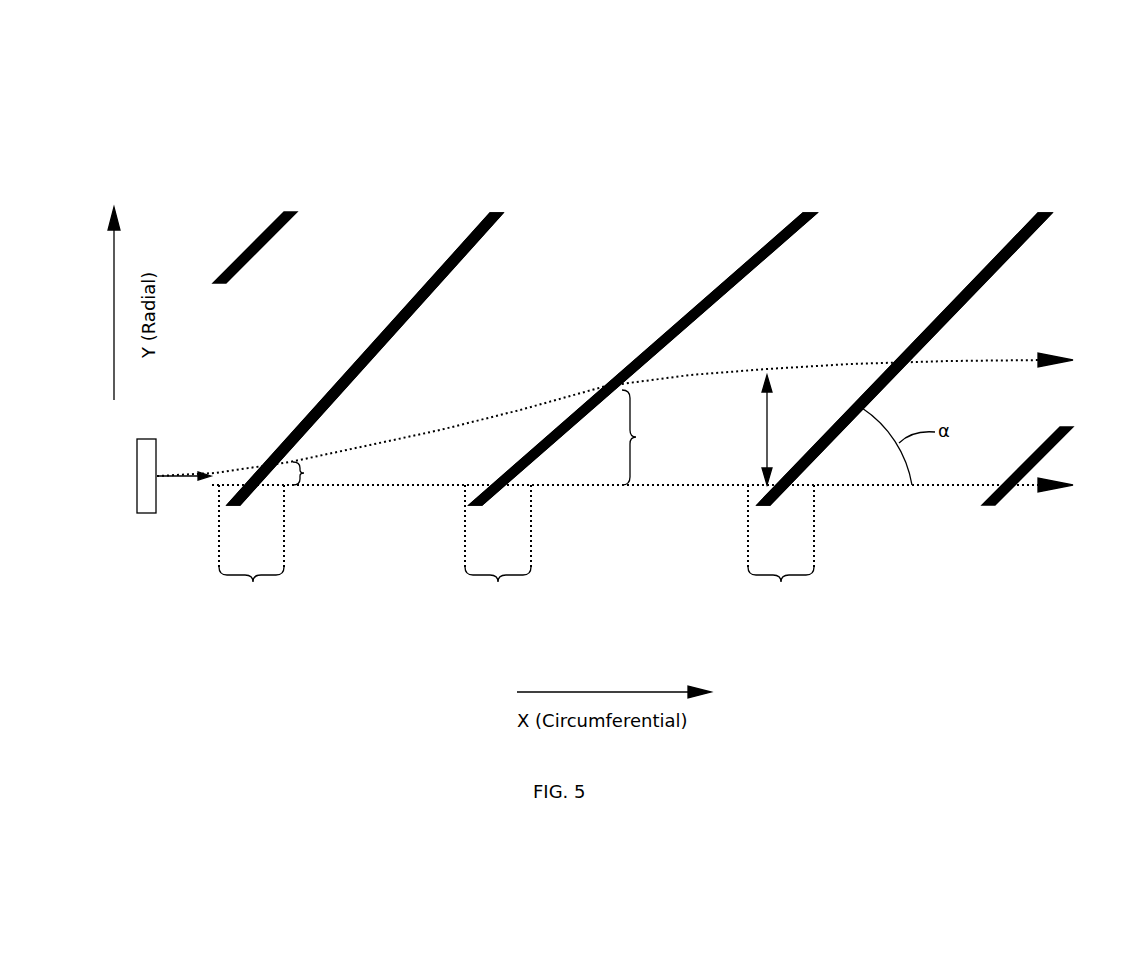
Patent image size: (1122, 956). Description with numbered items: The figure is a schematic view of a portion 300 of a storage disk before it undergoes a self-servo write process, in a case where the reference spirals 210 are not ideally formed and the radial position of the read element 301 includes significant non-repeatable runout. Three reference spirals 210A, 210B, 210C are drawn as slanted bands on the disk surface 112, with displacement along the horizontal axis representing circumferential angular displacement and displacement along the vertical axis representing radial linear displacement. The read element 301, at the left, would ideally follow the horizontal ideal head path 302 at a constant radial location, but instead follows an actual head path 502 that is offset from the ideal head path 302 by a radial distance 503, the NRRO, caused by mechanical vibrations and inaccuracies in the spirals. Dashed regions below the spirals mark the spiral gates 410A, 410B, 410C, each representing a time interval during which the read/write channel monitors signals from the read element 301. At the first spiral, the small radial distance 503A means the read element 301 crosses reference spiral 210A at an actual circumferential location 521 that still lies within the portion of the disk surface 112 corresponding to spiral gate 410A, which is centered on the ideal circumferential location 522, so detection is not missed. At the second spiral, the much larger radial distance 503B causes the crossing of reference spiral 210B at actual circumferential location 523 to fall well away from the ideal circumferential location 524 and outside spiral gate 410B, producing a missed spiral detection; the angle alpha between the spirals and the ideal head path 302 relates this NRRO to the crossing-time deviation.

The portion of storage disk 300 is at (419, 108).
The reference spirals 210 is at (417, 293).
The reference spiral 210A is at (500, 213).
The reference spiral 210B is at (810, 213).
The reference spiral 210C is at (1047, 213).
The disk surface 112 is at (500, 305).
The read element 301 is at (146, 513).
The ideal head path 302 is at (857, 487).
The actual head path 502 is at (950, 362).
The radial distance 503 is at (770, 422).
The radial distance 503A is at (304, 473).
The radial distance 503B is at (636, 437).
The spiral gate 410A is at (253, 582).
The spiral gate 410B is at (498, 582).
The spiral gate 410C is at (781, 582).
The actual circumferential location 521 is at (273, 432).
The ideal circumferential location 522 is at (252, 454).
The actual circumferential location 523 is at (606, 370).
The ideal circumferential location 524 is at (498, 459).